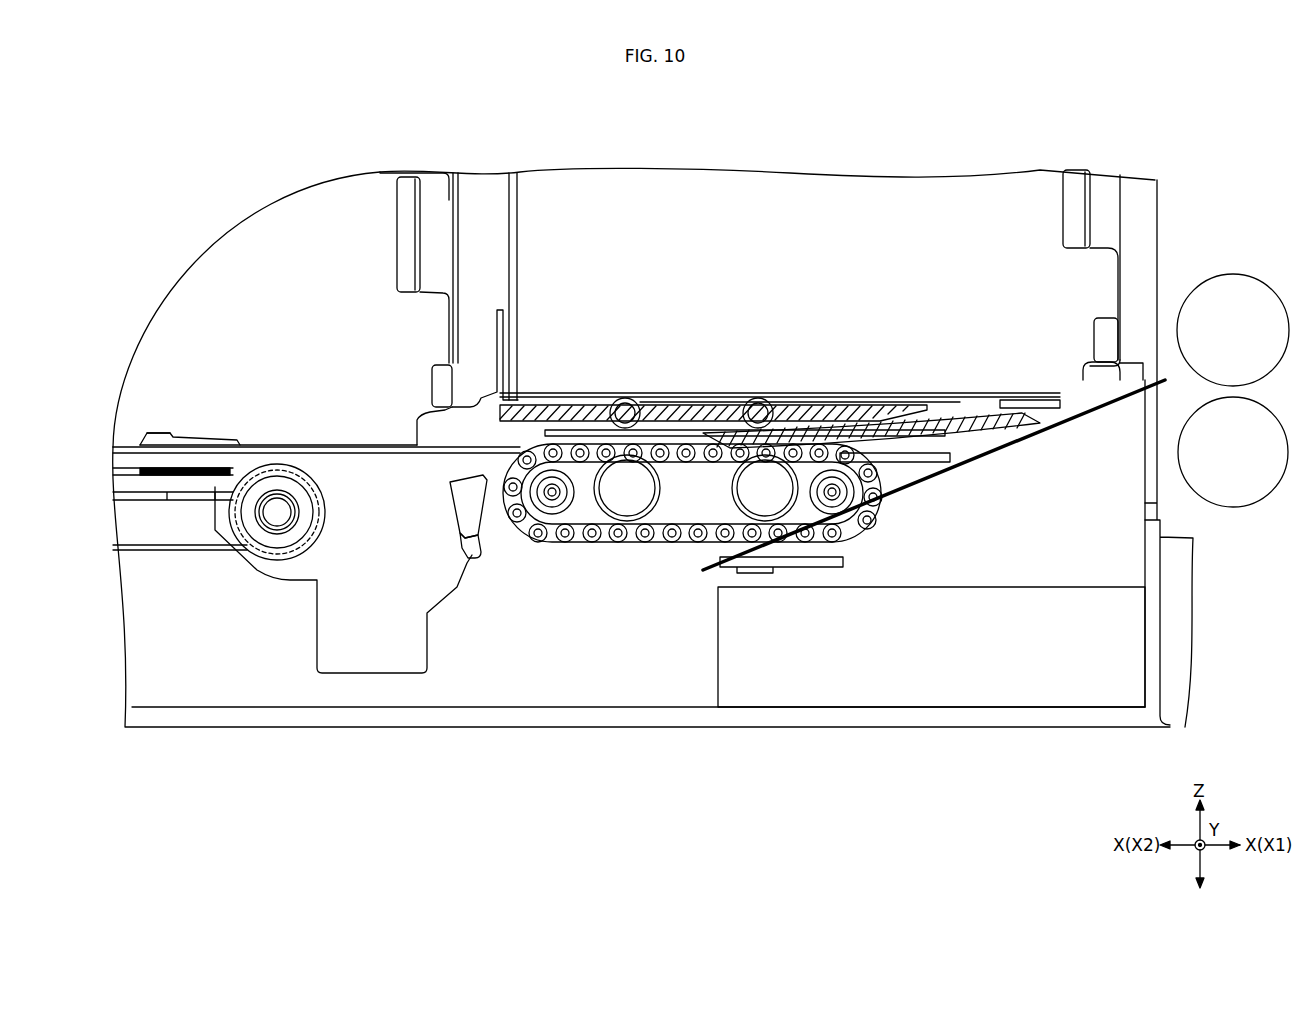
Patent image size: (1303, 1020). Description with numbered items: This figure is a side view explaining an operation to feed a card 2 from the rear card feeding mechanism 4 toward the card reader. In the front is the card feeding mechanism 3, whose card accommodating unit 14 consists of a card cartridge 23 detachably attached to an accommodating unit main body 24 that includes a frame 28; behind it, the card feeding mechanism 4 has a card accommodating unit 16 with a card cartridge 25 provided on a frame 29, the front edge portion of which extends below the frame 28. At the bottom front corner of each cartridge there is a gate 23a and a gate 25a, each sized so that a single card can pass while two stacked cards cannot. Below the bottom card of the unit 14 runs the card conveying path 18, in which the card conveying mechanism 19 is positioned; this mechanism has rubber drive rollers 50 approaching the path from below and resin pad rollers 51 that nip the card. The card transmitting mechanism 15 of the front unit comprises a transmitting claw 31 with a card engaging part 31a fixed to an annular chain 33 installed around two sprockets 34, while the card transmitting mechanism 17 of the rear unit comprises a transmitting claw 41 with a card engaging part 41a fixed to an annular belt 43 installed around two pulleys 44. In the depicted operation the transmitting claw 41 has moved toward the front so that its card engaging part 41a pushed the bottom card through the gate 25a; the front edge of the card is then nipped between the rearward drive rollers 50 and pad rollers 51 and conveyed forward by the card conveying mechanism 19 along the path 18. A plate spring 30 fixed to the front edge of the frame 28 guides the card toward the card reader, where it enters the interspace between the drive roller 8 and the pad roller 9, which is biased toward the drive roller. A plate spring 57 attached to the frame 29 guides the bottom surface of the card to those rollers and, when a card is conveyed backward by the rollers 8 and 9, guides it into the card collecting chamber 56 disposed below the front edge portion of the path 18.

The card 2 is at (556, 412).
The card feeding mechanism 3 is at (1129, 188).
The card accommodating unit 14 is at (1157, 190).
The card feeding mechanism 4 is at (448, 259).
The card accommodating unit 16 is at (462, 203).
The drive roller 8 is at (1233, 273).
The pad roller 9 is at (1233, 508).
The card transmitting mechanism 15 is at (593, 602).
The card transmitting mechanism 17 is at (205, 602).
The card conveying path 18 is at (947, 420).
The card conveying mechanism 19 is at (689, 355).
The card cartridge 23 is at (1122, 285).
The gate 23a is at (1084, 382).
The accommodating unit main body 24 is at (1157, 226).
The card cartridge 25 is at (458, 318).
The gate 25a is at (419, 432).
The frame 28 is at (852, 405).
The frame 29 is at (378, 445).
The plate spring 30 is at (1046, 395).
The transmitting claw 31 is at (450, 507).
The card engaging part 31a is at (462, 545).
The chain 33 is at (665, 542).
The sprocket 34 is at (553, 536).
The transmitting claw 41 is at (205, 433).
The card engaging part 41a is at (160, 433).
The belt 43 is at (168, 551).
The pulley 44 is at (283, 560).
The drive roller 50 is at (640, 470).
The pad roller 51 is at (625, 398).
The card collecting chamber 56 is at (1032, 587).
The plate spring 57 is at (1066, 416).